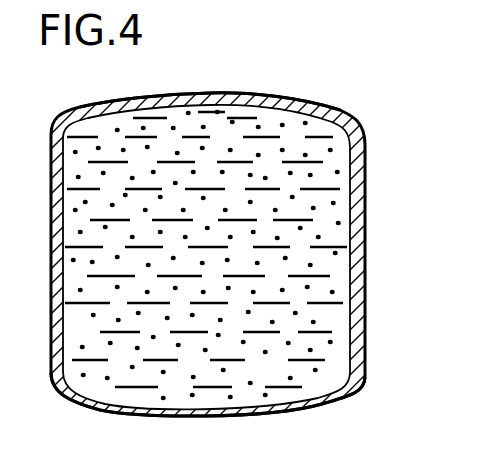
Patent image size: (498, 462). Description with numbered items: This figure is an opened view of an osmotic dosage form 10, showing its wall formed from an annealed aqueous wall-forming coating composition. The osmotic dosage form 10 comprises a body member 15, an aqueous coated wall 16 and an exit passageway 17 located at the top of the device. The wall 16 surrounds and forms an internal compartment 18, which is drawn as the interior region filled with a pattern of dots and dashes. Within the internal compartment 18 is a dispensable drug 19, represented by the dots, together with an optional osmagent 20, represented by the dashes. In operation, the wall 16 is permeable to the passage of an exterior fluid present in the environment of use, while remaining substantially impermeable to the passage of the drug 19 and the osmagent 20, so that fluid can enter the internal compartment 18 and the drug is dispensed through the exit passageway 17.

The osmotic dosage form 10 is at (249, 231).
The body member 15 is at (359, 152).
The aqueous coated wall 16 is at (351, 194).
The exit passageway 17 is at (207, 93).
The internal compartment 18 is at (340, 267).
The dispensable drug 19 is at (335, 317).
The osmagent 20 is at (322, 364).